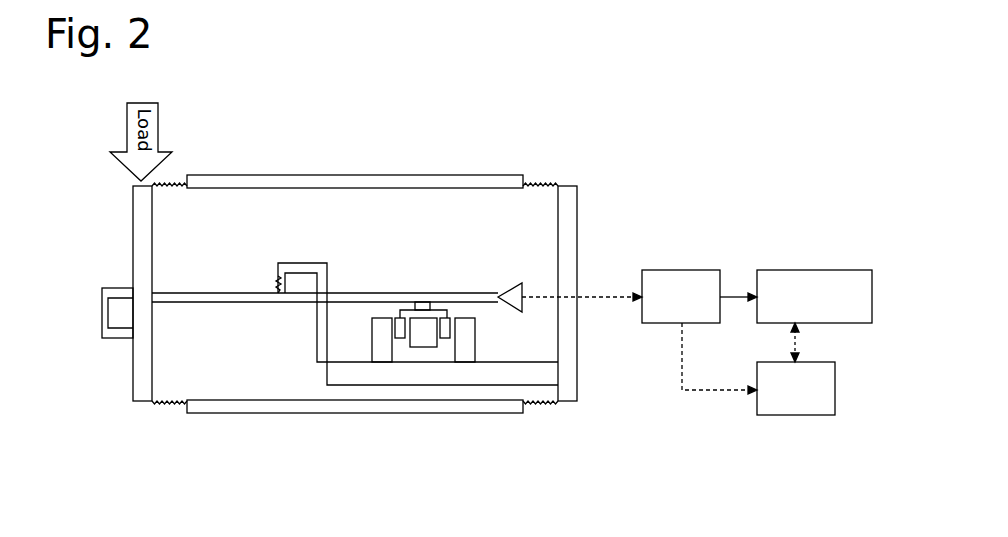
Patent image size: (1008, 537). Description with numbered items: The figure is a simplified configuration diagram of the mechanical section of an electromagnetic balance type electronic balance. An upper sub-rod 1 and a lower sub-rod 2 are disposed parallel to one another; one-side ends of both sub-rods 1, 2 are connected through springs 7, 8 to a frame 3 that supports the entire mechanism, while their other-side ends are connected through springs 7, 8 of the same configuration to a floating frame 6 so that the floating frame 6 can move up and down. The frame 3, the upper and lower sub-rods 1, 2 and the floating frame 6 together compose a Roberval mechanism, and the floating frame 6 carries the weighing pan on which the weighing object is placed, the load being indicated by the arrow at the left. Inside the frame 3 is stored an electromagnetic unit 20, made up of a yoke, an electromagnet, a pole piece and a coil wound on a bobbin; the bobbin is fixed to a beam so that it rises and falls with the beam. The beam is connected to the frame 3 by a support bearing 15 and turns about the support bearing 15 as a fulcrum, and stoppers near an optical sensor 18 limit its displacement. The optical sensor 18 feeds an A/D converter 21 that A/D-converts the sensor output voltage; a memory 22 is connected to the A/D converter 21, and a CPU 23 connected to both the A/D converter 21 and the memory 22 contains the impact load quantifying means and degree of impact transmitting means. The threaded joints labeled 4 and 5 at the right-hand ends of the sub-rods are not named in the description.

The upper sub-rod 1 is at (328, 183).
The lower sub-rod 2 is at (348, 415).
The frame 3 is at (567, 363).
The upper right threaded joint 4 is at (538, 183).
The lower right threaded joint 5 is at (540, 406).
The floating frame 6 is at (140, 367).
The spring 7 is at (170, 183).
The spring 8 is at (168, 406).
The support bearing 15 is at (278, 280).
The optical sensor 18 is at (503, 285).
The electromagnetic unit 20 is at (364, 328).
The A/D converter 21 is at (680, 270).
The memory 22 is at (793, 270).
The CPU 23 is at (795, 415).